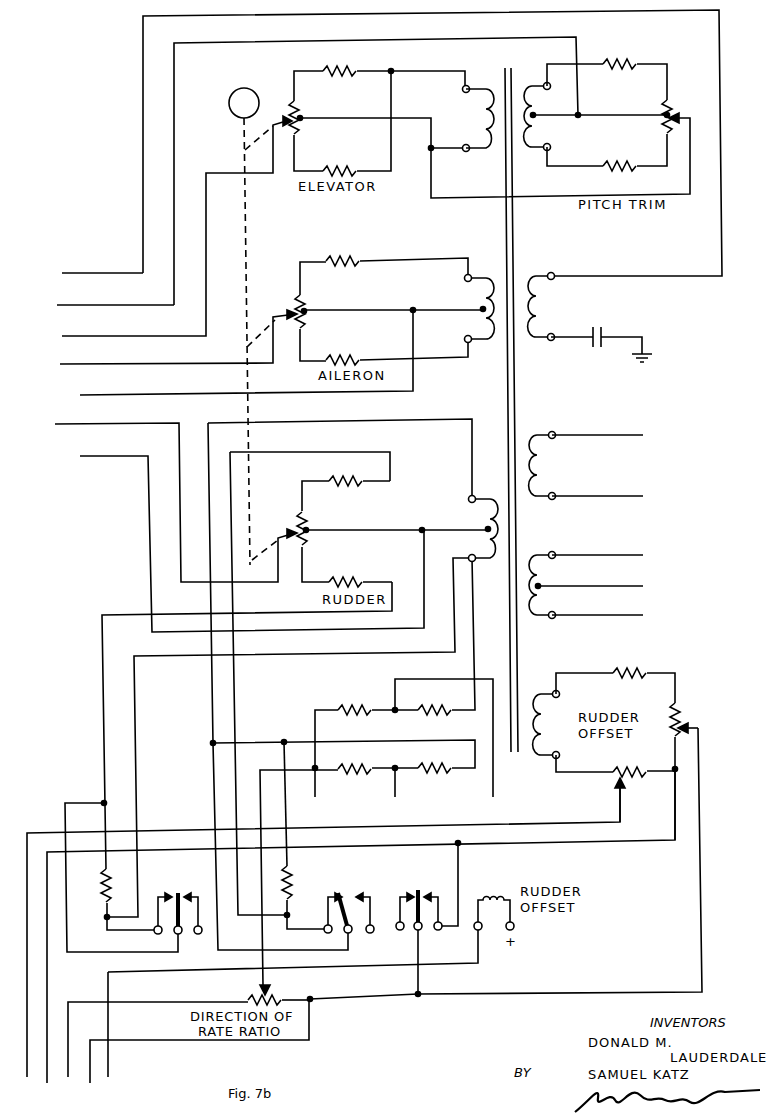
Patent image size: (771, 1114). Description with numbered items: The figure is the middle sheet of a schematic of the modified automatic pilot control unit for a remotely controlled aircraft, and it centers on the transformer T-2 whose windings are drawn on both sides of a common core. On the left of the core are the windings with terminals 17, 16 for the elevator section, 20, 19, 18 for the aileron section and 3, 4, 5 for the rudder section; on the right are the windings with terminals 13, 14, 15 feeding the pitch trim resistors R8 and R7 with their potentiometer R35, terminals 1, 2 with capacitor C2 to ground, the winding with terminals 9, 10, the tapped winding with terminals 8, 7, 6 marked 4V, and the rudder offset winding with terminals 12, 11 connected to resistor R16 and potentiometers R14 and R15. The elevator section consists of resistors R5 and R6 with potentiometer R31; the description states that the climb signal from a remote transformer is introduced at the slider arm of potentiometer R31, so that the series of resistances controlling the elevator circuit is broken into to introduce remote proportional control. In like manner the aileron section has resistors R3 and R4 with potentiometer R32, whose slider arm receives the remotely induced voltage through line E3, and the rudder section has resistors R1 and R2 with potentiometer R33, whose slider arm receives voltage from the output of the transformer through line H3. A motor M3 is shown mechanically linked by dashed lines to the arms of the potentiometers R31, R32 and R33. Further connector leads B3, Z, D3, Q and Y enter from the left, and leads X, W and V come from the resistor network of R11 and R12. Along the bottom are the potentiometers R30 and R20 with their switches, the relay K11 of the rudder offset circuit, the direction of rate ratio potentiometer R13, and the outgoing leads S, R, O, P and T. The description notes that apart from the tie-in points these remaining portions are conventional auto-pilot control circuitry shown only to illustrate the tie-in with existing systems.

The transformer T-2 is at (513, 422).
The connector terminal B3 is at (86, 273).
The connector terminal Z is at (105, 304).
The connector terminal D3 is at (156, 233).
The line E3 is at (158, 343).
The connector terminal Q is at (237, 355).
The line H3 is at (158, 499).
The connector terminal Y is at (242, 540).
The motor M3 is at (244, 103).
The resistor R5 is at (379, 75).
The resistor R6 is at (342, 123).
The potentiometer R31 is at (486, 146).
The transformer terminal 17 is at (455, 90).
The transformer terminal 16 is at (467, 159).
The transformer terminal 13 is at (556, 86).
The transformer terminal 14 is at (600, 106).
The transformer terminal 15 is at (556, 146).
The resistor R8 is at (607, 70).
The resistor R7 is at (607, 159).
The pitch trim potentiometer R35 is at (684, 110).
The resistor R3 is at (384, 267).
The resistor R4 is at (384, 347).
The potentiometer R32 is at (385, 309).
The transformer terminal 20 is at (457, 278).
The transformer terminal 19 is at (464, 302).
The transformer terminal 18 is at (457, 339).
The transformer terminal 1 is at (551, 267).
The transformer terminal 2 is at (552, 347).
The capacitor C2 is at (601, 333).
The transformer terminal 9 is at (595, 427).
The transformer terminal 10 is at (594, 506).
The transformer terminal 8 is at (595, 547).
The transformer terminal 7 is at (589, 579).
The transformer terminal 6 is at (595, 608).
The 4 volt tap 4V is at (658, 585).
The resistor R1 is at (346, 485).
The resistor R2 is at (347, 567).
The potentiometer R33 is at (387, 528).
The transformer terminal 3 is at (464, 499).
The transformer terminal 4 is at (472, 528).
The transformer terminal 5 is at (465, 556).
The resistor R11 is at (354, 718).
The resistor R12 is at (434, 717).
The connector terminal X is at (314, 807).
The connector terminal W is at (395, 807).
The connector terminal V is at (496, 804).
The transformer terminal 12 is at (565, 694).
The transformer terminal 11 is at (565, 755).
The resistor R16 is at (615, 677).
The rudder offset potentiometer R15 is at (615, 788).
The rudder offset potentiometer R14 is at (691, 771).
The potentiometer R30 is at (91, 885).
The potentiometer R20 is at (302, 882).
The rudder offset relay K11 is at (486, 910).
The connector terminal S is at (322, 942).
The connector terminal R is at (359, 938).
The connector terminal O is at (156, 1050).
The connector terminal P is at (197, 1053).
The connector terminal T is at (107, 1034).
The direction of rate ratio potentiometer R13 is at (269, 991).